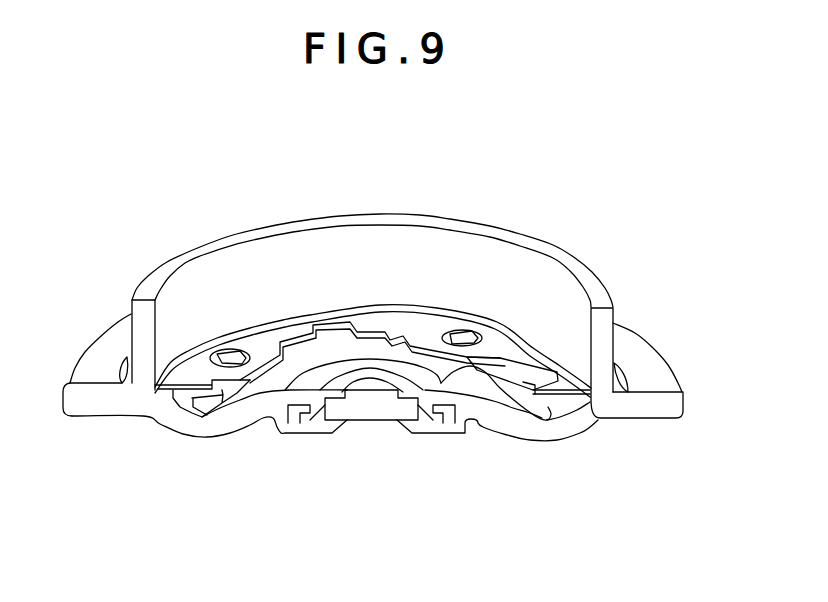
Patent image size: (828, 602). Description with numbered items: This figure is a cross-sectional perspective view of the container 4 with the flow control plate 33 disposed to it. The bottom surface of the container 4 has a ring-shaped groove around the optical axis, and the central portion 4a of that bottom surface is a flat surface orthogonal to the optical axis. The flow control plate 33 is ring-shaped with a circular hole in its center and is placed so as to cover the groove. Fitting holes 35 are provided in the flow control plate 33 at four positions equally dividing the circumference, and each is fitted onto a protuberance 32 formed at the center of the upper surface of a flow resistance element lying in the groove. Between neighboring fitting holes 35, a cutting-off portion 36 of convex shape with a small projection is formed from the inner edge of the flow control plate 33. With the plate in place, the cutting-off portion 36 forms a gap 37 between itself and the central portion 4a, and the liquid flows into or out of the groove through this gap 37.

The container 4 is at (606, 282).
The central portion 4a is at (480, 375).
The protuberance 32 is at (467, 330).
The flow control plate 33 is at (510, 349).
The fitting hole 35 is at (222, 350).
The cutting-off portion 36 is at (292, 333).
The gap 37 is at (333, 340).